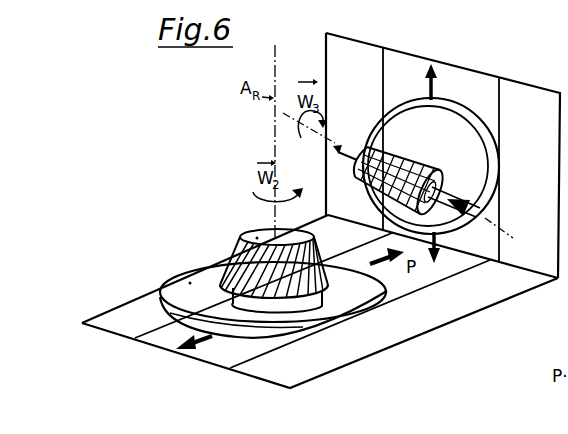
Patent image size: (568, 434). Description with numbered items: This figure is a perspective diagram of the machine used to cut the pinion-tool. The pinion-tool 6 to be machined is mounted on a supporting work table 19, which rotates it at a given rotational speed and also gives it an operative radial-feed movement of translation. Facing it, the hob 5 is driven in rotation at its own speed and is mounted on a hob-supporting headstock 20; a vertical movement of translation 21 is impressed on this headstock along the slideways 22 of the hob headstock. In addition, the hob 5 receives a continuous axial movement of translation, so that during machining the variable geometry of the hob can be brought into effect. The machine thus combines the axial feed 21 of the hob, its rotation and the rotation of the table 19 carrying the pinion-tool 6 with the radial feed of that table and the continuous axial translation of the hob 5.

The hob 5 is at (430, 170).
The pinion-tool 6 is at (257, 238).
The work table 19 is at (190, 283).
The hob-supporting headstock 20 is at (443, 135).
The vertical movement of translation 21 is at (430, 97).
The slideways 22 is at (387, 80).